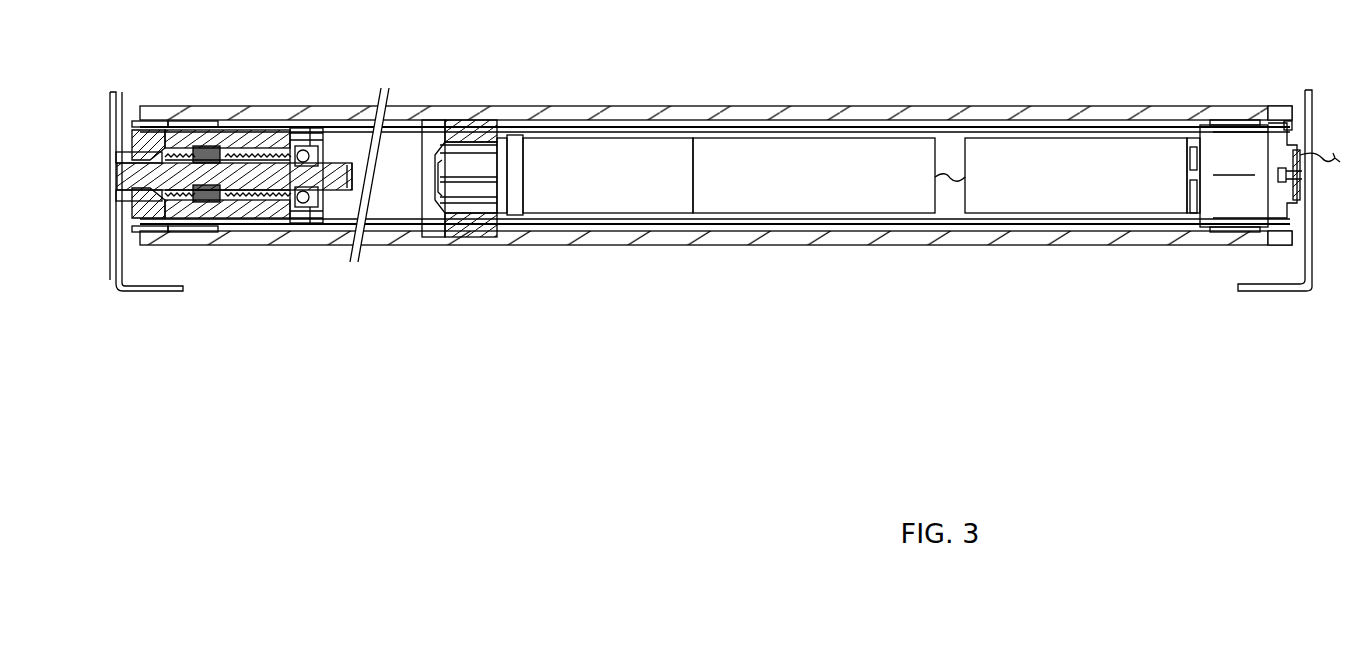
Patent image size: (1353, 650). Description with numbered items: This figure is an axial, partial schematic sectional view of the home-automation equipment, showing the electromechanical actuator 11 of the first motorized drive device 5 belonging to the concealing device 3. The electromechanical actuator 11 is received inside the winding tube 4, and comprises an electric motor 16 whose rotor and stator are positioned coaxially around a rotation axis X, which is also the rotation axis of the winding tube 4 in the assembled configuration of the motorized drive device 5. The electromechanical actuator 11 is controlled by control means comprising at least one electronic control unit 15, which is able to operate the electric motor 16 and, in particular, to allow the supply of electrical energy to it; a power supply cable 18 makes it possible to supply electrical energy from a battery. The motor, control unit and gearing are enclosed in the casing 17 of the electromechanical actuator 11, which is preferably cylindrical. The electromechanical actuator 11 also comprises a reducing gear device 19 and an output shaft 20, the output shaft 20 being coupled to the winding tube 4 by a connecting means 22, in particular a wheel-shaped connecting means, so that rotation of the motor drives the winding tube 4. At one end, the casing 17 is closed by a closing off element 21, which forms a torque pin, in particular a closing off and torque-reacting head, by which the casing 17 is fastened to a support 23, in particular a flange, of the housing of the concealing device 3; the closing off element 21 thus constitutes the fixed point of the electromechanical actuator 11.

The concealing device 3 is at (270, 293).
The winding tube 4 is at (281, 106).
The motorized drive device 5 is at (1194, 92).
The electromechanical actuator 11 is at (940, 138).
The electronic control unit 15 is at (1122, 153).
The electric motor 16 is at (908, 150).
The casing 17 is at (1083, 132).
The power supply cable 18 is at (1330, 162).
The reducing gear device 19 is at (585, 163).
The output shaft 20 is at (432, 189).
The closing off element 21 is at (1278, 203).
The connecting means 22 is at (461, 126).
The support 23 is at (140, 289).